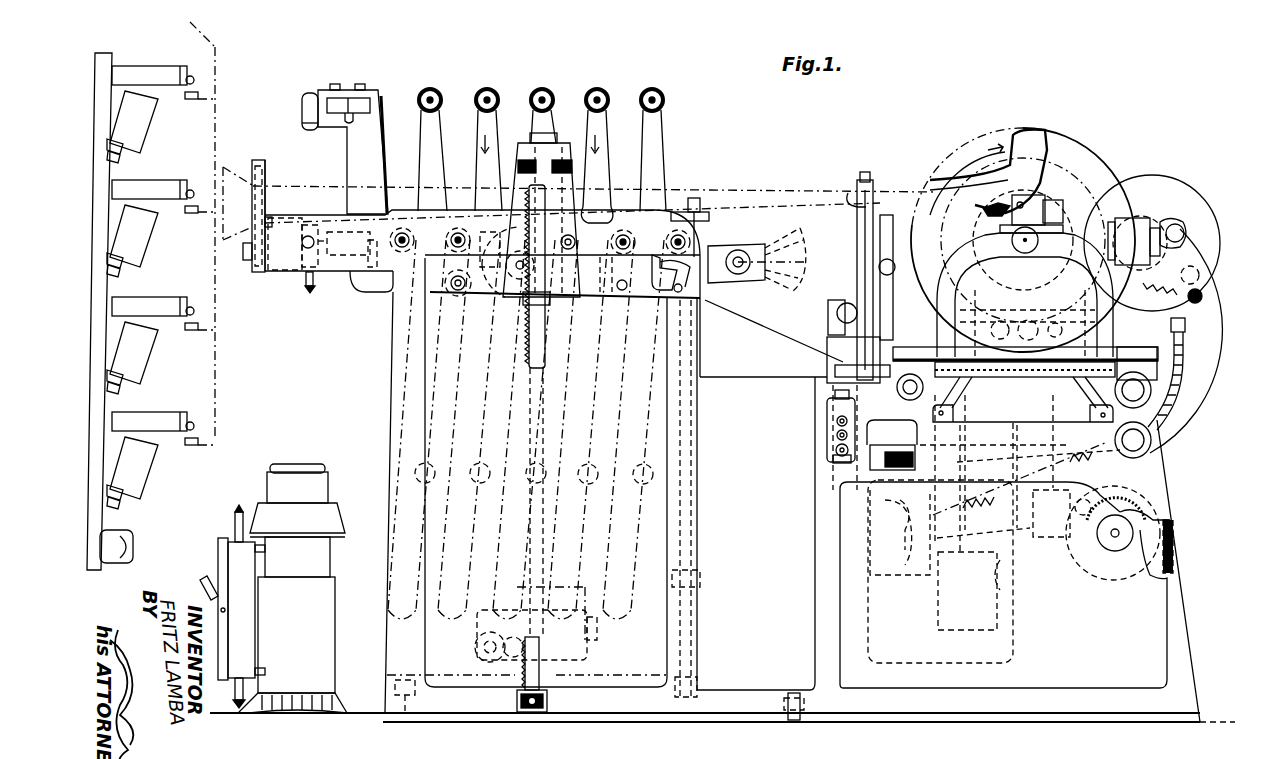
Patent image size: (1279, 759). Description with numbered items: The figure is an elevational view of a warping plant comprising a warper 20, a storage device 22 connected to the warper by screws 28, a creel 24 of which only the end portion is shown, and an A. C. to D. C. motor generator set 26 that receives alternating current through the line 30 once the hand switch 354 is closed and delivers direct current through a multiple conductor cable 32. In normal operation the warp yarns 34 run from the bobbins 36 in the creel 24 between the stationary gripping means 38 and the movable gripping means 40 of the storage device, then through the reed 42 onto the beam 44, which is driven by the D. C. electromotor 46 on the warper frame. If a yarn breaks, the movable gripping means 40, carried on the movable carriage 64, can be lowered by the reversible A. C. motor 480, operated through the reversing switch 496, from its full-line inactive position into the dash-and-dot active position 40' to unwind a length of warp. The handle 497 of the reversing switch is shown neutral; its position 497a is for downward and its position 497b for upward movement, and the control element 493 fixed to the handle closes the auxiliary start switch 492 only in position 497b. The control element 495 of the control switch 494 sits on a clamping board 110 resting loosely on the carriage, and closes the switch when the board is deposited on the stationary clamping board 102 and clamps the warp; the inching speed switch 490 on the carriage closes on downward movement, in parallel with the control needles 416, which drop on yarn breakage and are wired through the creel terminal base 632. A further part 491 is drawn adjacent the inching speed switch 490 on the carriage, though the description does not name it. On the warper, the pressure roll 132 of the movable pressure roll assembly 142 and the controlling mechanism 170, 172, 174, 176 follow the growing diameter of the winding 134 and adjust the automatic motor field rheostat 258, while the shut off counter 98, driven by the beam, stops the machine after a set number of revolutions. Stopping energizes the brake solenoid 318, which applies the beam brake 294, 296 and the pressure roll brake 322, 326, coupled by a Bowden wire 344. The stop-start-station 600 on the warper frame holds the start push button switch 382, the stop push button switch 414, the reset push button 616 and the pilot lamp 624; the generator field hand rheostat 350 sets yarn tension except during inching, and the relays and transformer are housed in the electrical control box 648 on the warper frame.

The warper 20 is at (1172, 490).
The storage device 22 is at (390, 398).
The creel 24 is at (120, 518).
The A. C. to D. C. motor generator set 26 is at (304, 644).
The screws 28 is at (792, 722).
The line 30 is at (235, 530).
The multiple conductor cable 32 is at (235, 690).
The warp yarns 34 is at (172, 93).
The bobbins 36 is at (142, 135).
The stationary gripping means 38 is at (405, 236).
The movable gripping means 40 is at (542, 138).
The active position of movable gripping means 40' is at (526, 429).
The reed 42 is at (853, 203).
The beam 44 is at (1090, 145).
The D. C. electromotor 46 is at (980, 178).
The movable carriage 64 is at (428, 305).
The shut off counter 98 is at (1040, 196).
The stationary clamping board 102 is at (342, 232).
The clamping board 110 is at (342, 97).
The pressure roll 132 is at (1160, 200).
The winding 134 is at (986, 209).
The pressure roll assembly 142 is at (1204, 377).
The controlling mechanism 170 is at (1152, 470).
The controlling mechanism 172 is at (1000, 593).
The controlling mechanism 174 is at (880, 545).
The controlling mechanism 176 is at (875, 564).
The automatic motor field rheostat 258 is at (880, 460).
The beam brake 294 is at (1003, 300).
The beam brake 296 is at (941, 303).
The brake solenoid 318 is at (1003, 550).
The pressure roll brake 322 is at (1200, 248).
The pressure roll brake 326 is at (1152, 302).
The Bowden wire 344 is at (1208, 358).
The generator field hand rheostat 350 is at (1138, 534).
The hand switch 354 is at (207, 590).
The start push button switch 382 is at (837, 449).
The stop push button switch 414 is at (838, 434).
The control needles 416 is at (192, 98).
The reversible A. C. motor 480 is at (609, 206).
The inching speed switch 490 is at (580, 292).
The rod 491 is at (620, 328).
The auxiliary start switch 492 is at (692, 300).
The control element 493 is at (700, 292).
The control switch 494 is at (305, 272).
The control element 495 is at (302, 112).
The reversing switch 496 is at (737, 249).
The handle 497 is at (719, 248).
The handle position for downward movement 497a is at (792, 288).
The handle position for upward movement 497b is at (798, 240).
The stop-start-station 600 is at (838, 419).
The reset push button 616 is at (833, 458).
The pilot lamp 624 is at (835, 396).
The creel terminal base 632 is at (125, 556).
The electrical control box 648 is at (890, 664).